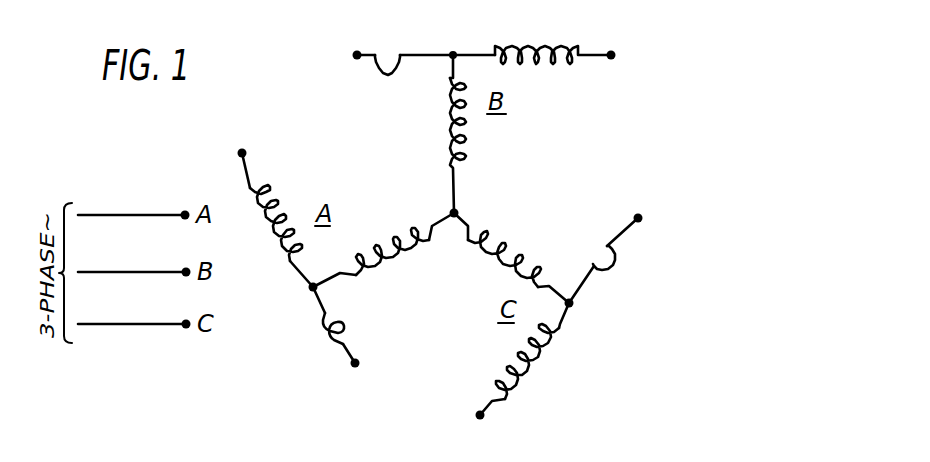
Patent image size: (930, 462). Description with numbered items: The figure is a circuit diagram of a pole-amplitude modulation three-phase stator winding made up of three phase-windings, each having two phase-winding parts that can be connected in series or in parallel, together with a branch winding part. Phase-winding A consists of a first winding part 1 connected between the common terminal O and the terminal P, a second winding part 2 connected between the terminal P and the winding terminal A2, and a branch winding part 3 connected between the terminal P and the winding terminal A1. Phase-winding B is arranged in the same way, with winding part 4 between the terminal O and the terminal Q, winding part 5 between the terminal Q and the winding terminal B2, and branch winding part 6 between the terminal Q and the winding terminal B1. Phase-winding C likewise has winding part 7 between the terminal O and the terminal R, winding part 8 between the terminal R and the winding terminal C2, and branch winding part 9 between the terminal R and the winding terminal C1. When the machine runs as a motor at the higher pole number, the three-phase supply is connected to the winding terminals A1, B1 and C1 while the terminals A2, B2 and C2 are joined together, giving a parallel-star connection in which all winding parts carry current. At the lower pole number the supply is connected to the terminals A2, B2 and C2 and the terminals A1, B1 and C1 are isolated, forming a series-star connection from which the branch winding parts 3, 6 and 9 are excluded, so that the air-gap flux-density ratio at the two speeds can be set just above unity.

The winding part 1 is at (398, 236).
The winding part 2 is at (283, 212).
The branch winding part 3 is at (345, 323).
The winding part 4 is at (448, 125).
The winding part 5 is at (552, 46).
The branch winding part 6 is at (385, 74).
The winding part 7 is at (521, 244).
The winding part 8 is at (548, 352).
The branch winding part 9 is at (619, 268).
The terminal O is at (461, 210).
The terminal P is at (306, 296).
The terminal Q is at (454, 50).
The terminal R is at (577, 306).
The winding terminal A1 is at (356, 383).
The winding terminal A2 is at (228, 158).
The winding terminal B1 is at (357, 43).
The winding terminal B2 is at (623, 43).
The winding terminal C1 is at (637, 202).
The winding terminal C2 is at (473, 434).